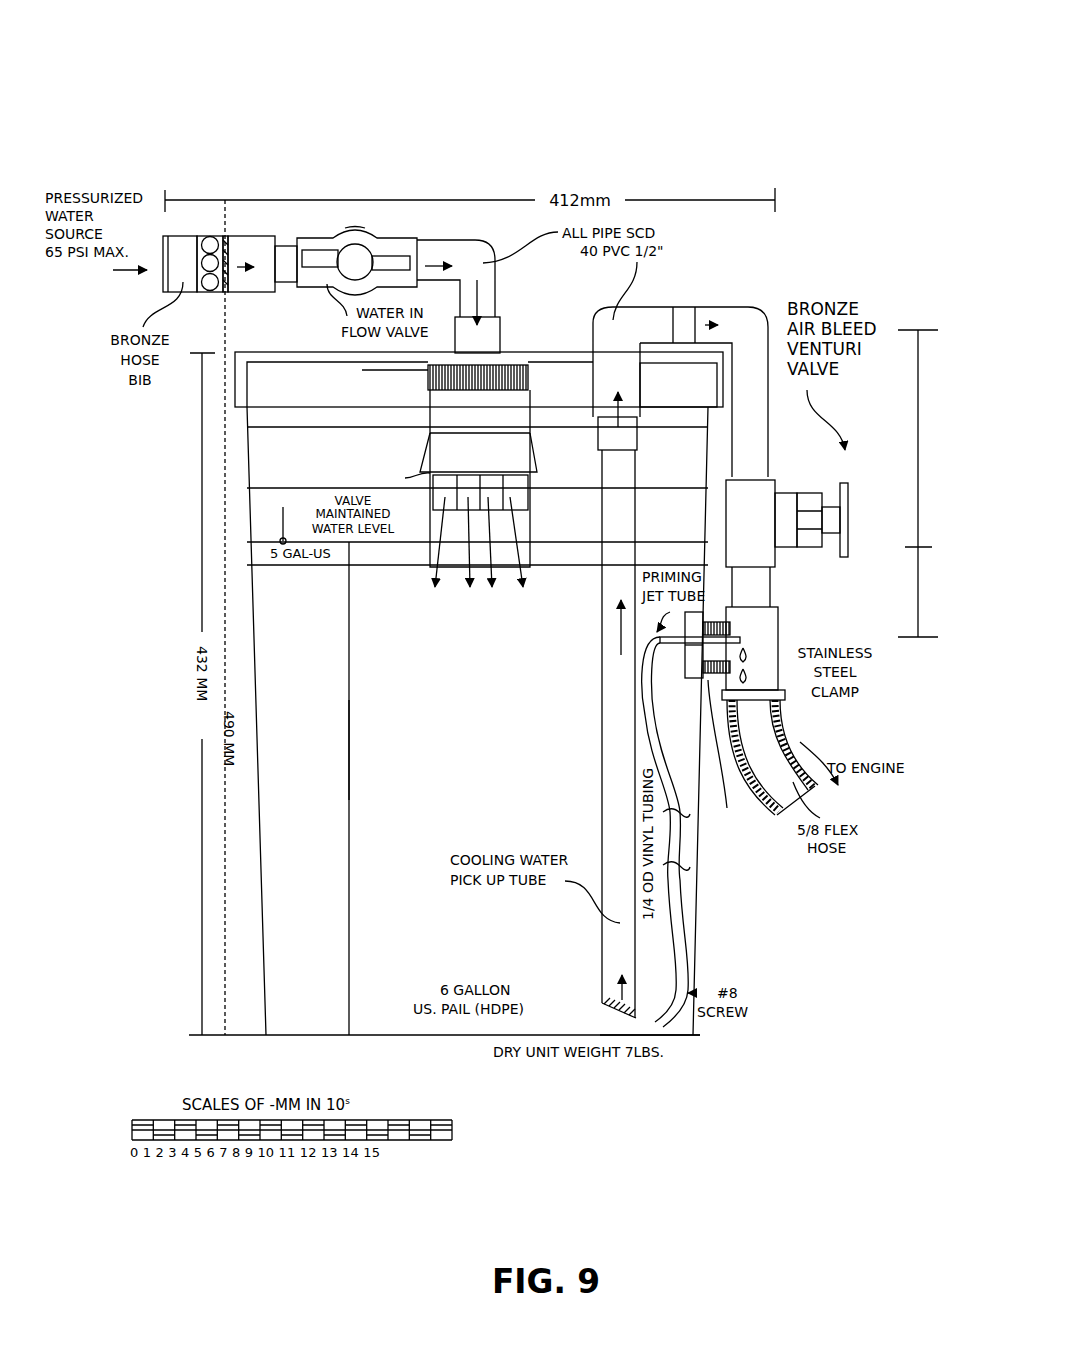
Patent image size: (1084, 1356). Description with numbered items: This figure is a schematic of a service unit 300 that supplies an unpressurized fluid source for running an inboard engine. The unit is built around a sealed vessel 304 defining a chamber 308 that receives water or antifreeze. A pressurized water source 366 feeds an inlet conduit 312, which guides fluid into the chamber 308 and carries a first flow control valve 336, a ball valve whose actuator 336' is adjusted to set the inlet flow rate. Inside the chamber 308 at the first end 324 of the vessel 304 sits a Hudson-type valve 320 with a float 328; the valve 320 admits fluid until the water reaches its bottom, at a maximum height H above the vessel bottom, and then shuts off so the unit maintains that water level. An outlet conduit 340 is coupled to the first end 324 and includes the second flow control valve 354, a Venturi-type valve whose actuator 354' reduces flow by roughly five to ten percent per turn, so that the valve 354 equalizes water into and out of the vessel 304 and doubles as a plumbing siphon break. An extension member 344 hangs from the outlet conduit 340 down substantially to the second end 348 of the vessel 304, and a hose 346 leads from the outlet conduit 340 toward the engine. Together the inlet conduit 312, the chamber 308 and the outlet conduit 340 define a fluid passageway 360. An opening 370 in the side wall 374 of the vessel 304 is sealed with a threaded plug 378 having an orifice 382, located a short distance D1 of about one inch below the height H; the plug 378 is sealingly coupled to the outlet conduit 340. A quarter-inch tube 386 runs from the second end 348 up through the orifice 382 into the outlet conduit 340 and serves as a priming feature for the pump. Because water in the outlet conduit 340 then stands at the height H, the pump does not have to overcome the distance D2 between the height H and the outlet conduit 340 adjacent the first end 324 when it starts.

The service unit 300 is at (810, 85).
The vessel 304 is at (700, 1035).
The chamber 308 is at (292, 780).
The inlet conduit 312 is at (448, 240).
The valve 320 is at (467, 455).
The first end of the vessel 324 is at (277, 352).
The float 328 is at (430, 405).
The first flow control valve 336 is at (330, 213).
The actuator 336' is at (331, 191).
The outlet conduit 340 is at (780, 637).
The extension member 344 is at (602, 752).
The hose 346 is at (797, 733).
The second end of the vessel 348 is at (311, 1034).
The second flow control valve 354 is at (793, 540).
The valve actuator 354' is at (872, 498).
The fluid passageway 360 is at (248, 235).
The pressurized water source 366 is at (110, 271).
The opening 370 is at (722, 607).
The side wall 374 is at (697, 883).
The plug 378 is at (729, 753).
The orifice 382 is at (687, 678).
The tube 386 is at (602, 678).
The height H is at (350, 757).
The distance D1 is at (920, 585).
The distance D2 is at (920, 392).